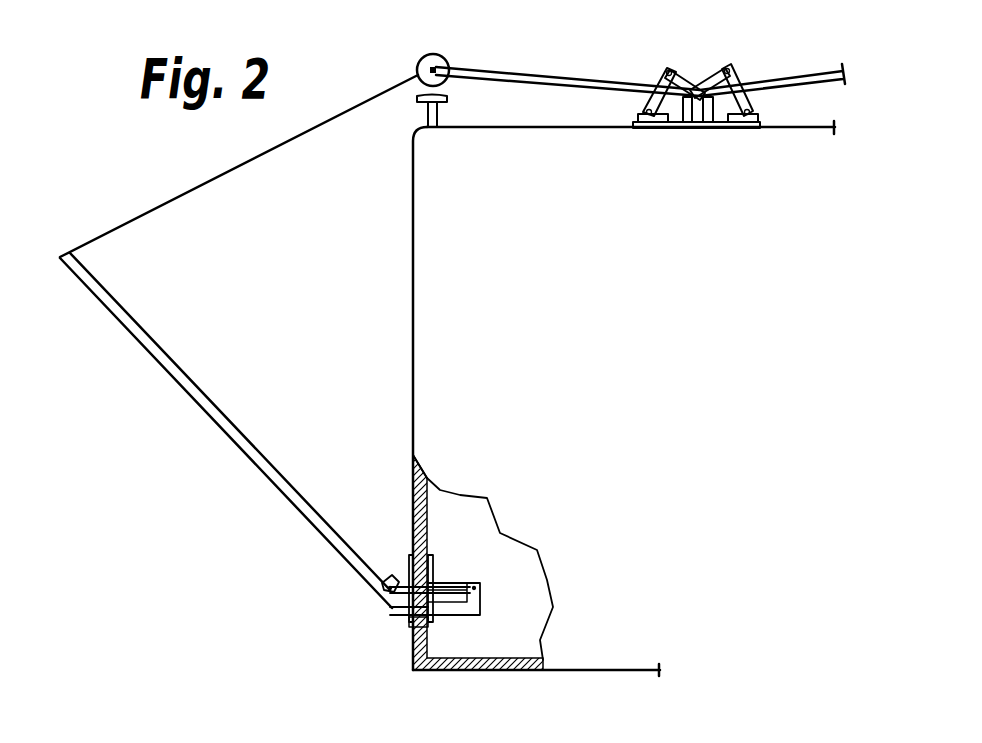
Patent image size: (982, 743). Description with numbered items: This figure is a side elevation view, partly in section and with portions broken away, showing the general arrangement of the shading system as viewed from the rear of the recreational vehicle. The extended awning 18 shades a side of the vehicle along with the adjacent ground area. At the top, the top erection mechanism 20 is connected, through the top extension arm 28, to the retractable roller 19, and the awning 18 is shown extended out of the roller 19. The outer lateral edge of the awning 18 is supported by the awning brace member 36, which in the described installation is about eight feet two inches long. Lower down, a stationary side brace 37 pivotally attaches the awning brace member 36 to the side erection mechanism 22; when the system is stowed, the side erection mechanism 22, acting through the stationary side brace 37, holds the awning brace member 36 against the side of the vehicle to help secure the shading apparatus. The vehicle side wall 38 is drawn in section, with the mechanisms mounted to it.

The awning 18 is at (223, 171).
The retractable roller 19 is at (433, 54).
The top erection mechanism 20 is at (702, 68).
The side erection mechanism 22 is at (387, 611).
The top extension arm 28 is at (513, 70).
The awning brace member 36 is at (147, 332).
The stationary side brace 37 is at (405, 618).
The tank wall 38 is at (412, 253).